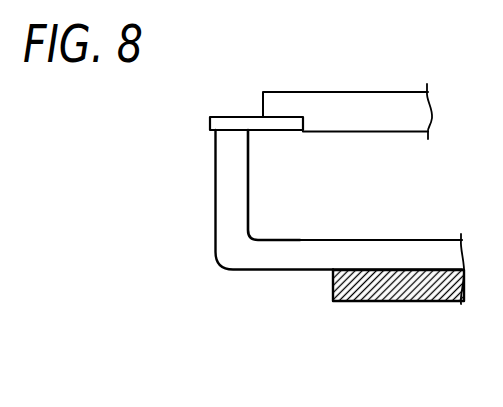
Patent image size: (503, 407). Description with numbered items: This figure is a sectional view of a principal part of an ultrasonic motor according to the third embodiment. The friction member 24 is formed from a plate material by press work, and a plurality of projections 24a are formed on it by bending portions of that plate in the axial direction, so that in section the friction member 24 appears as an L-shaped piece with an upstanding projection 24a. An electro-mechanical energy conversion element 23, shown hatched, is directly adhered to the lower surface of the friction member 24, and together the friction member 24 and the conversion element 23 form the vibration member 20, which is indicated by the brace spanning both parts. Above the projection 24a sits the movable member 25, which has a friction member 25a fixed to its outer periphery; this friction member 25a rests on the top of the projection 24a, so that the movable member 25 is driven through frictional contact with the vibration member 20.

The vibration member 20 is at (143, 132).
The electro-mechanical energy conversion element 23 is at (397, 303).
The friction member 24 is at (348, 239).
The projections 24a is at (222, 196).
The movable member 25 is at (345, 92).
The friction member 25a is at (234, 116).